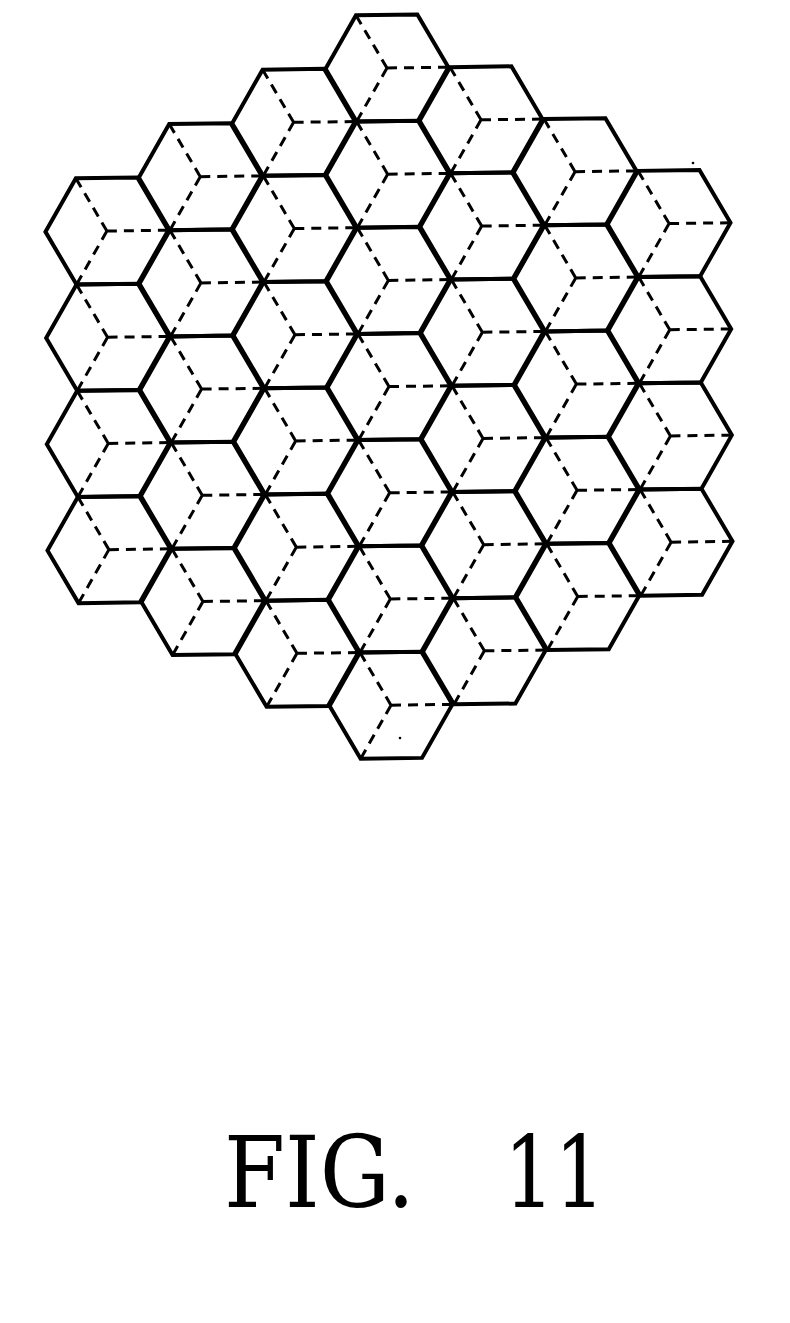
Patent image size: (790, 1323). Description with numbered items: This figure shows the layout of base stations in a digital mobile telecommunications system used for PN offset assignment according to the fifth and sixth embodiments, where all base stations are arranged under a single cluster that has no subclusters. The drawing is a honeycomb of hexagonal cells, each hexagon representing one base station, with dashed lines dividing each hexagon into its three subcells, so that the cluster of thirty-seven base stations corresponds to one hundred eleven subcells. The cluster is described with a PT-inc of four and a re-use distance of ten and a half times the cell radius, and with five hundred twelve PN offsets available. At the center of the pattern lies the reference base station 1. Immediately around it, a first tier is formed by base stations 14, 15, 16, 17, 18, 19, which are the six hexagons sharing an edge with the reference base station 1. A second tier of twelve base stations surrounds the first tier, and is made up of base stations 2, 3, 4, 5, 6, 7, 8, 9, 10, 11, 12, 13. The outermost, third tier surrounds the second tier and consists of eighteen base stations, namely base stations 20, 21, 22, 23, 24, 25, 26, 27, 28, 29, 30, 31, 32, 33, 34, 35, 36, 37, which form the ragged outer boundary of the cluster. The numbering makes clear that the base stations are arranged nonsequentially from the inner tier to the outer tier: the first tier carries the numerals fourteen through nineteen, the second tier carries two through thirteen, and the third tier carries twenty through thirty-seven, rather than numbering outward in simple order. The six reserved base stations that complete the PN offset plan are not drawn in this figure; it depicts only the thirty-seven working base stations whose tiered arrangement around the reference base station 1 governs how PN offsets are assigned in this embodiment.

The reference base station 1 is at (388, 387).
The base station 2 is at (387, 174).
The base station 3 is at (390, 599).
The base station 4 is at (200, 283).
The base station 5 is at (576, 490).
The base station 6 is at (202, 495).
The base station 7 is at (575, 278).
The base station 8 is at (483, 545).
The base station 9 is at (294, 229).
The base station 10 is at (576, 384).
The base station 11 is at (201, 389).
The base station 12 is at (296, 547).
The base station 13 is at (481, 226).
The base station 14 is at (388, 280).
The base station 15 is at (389, 493).
The base station 16 is at (294, 335).
The base station 17 is at (482, 439).
The base station 18 is at (295, 441).
The base station 19 is at (482, 332).
The base station 20 is at (386, 68).
The base station 21 is at (390, 705).
The base station 22 is at (200, 177).
The base station 23 is at (577, 597).
The base station 24 is at (107, 337).
The base station 25 is at (670, 436).
The base station 26 is at (108, 550).
The base station 27 is at (668, 224).
The base station 28 is at (296, 653).
The base station 29 is at (480, 120).
The base station 30 is at (484, 651).
The base station 31 is at (293, 122).
The base station 32 is at (670, 542).
The base station 33 is at (106, 231).
The base station 34 is at (669, 330).
The base station 35 is at (107, 444).
The base station 36 is at (574, 172).
The base station 37 is at (202, 602).